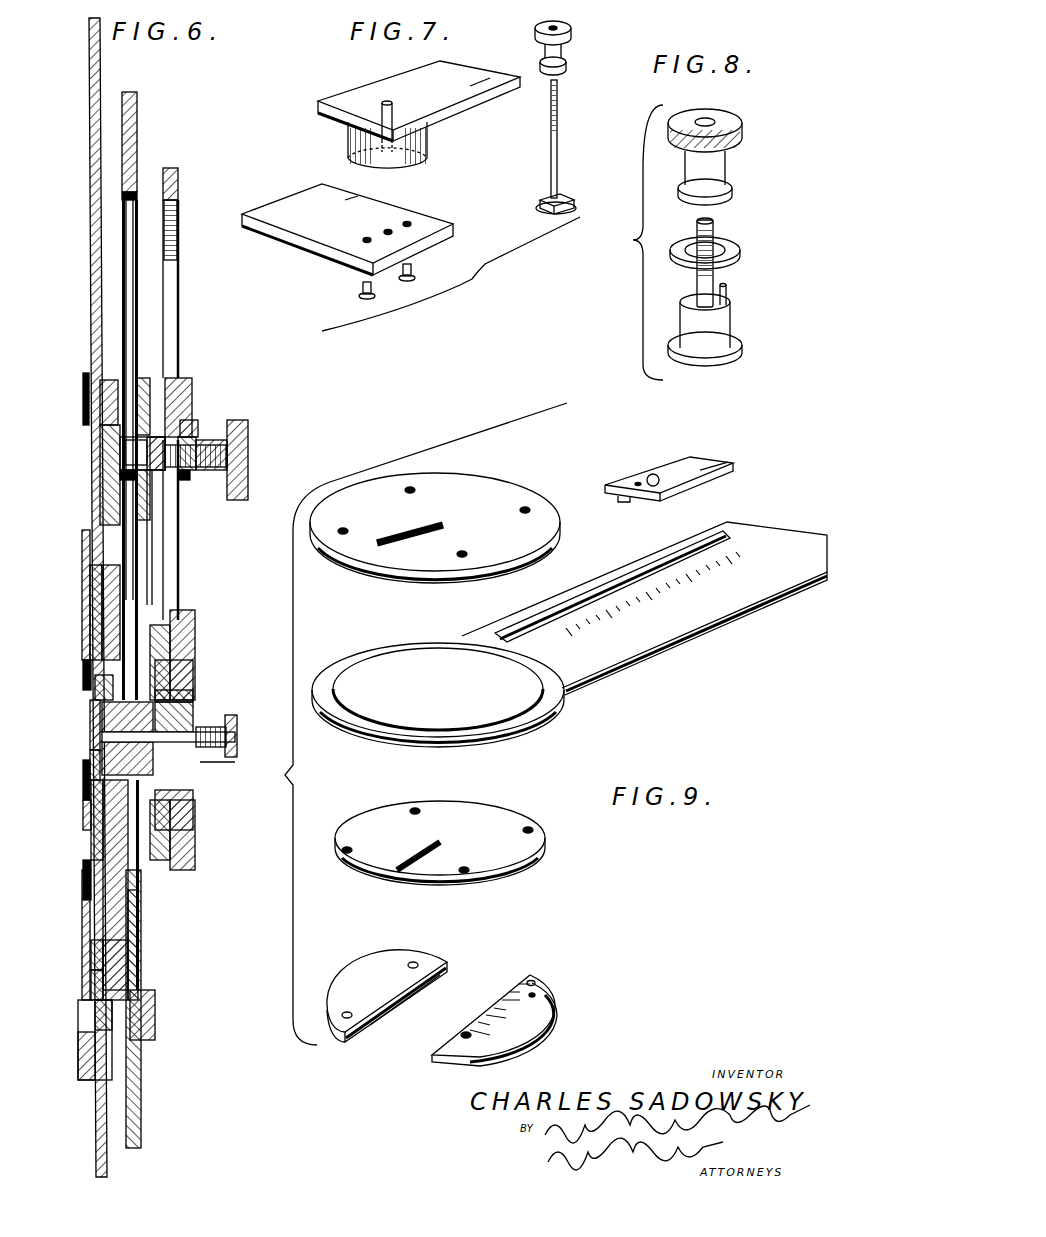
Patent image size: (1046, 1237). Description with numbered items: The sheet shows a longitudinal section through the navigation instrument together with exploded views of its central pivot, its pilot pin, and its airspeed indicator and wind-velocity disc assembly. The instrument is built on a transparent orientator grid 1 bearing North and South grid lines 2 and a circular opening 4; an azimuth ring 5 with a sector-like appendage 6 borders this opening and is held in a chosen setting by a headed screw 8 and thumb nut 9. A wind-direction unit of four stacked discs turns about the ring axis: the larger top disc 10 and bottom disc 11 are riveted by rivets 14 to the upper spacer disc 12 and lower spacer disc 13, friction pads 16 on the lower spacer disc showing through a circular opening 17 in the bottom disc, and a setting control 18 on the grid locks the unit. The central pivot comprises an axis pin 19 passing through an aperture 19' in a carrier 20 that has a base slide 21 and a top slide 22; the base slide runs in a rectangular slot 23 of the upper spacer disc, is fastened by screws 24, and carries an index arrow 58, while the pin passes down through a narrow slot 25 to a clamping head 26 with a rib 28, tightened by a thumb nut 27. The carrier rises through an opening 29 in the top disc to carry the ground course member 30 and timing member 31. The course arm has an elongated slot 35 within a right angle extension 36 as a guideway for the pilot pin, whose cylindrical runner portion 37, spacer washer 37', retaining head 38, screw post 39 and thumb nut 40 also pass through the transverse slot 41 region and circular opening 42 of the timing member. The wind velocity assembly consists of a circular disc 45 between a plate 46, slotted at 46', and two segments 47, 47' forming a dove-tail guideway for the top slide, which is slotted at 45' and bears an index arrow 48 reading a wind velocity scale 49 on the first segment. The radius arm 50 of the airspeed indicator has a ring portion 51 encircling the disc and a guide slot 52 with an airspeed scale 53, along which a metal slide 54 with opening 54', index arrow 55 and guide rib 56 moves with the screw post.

In FIG. 6, the orientator unit or grid 1 is at (92, 70).
In FIG. 7, the North and South grid lines 2 is at (316, 246).
In FIG. 6, the circular opening 4 is at (92, 960).
In FIG. 6, the azimuth ring 5 is at (88, 990).
In FIG. 6, the sector-like appendage 6 is at (110, 490).
In FIG. 6, the headed screw 8 is at (84, 398).
In FIG. 6, the thumb nut 9 is at (100, 414).
In FIG. 6, the top disc 10 is at (140, 956).
In FIG. 6, the bottom disc 11 is at (84, 562).
In FIG. 6, the upper spacer disc 12 is at (92, 602).
In FIG. 6, the lower spacer disc 13 is at (104, 616).
In FIG. 6, the rivets 14 is at (83, 682).
In FIG. 6, the friction pads 16 is at (86, 824).
In FIG. 6, the circular opening 17 is at (86, 878).
In FIG. 6, the setting control 18 is at (80, 1078).
In FIG. 6, the axis pin 19 is at (186, 728).
In FIG. 7, the axis pin 19 is at (576, 139).
In FIG. 7, the aperture 19' is at (364, 152).
In FIG. 6, the carrier 20 is at (158, 748).
In FIG. 7, the carrier 20 is at (428, 152).
In FIG. 6, the base slide 21 is at (90, 772).
In FIG. 6, the top slide 22 is at (185, 706).
In FIG. 7, the top slide 22 is at (390, 92).
In FIG. 6, the rectangular slot 23 is at (100, 861).
In FIG. 7, the screws 24 is at (407, 282).
In FIG. 6, the narrow slot 25 is at (84, 795).
In FIG. 6, the clamping head 26 is at (94, 726).
In FIG. 7, the clamping head 26 is at (548, 214).
In FIG. 6, the thumb nut 27 is at (234, 708).
In FIG. 7, the thumb nut 27 is at (572, 34).
In FIG. 6, the rib 28 is at (94, 752).
In FIG. 7, the rib 28 is at (566, 196).
In FIG. 6, the opening 29 is at (104, 688).
In FIG. 6, the ground course member or arm 30 is at (142, 1098).
In FIG. 6, the timing member 31 is at (144, 378).
In FIG. 6, the elongated slot 35 is at (128, 240).
In FIG. 6, the right angle extension 36 is at (138, 142).
In FIG. 6, the cylindrical runner portion 37 is at (108, 463).
In FIG. 8, the cylindrical runner portion 37 is at (727, 316).
In FIG. 6, the spacer washer 37' is at (108, 454).
In FIG. 8, the spacer washer 37' is at (726, 248).
In FIG. 6, the retaining head or flange 38 is at (125, 470).
In FIG. 8, the retaining head or flange 38 is at (742, 342).
In FIG. 6, the screw post 39 is at (248, 456).
In FIG. 8, the screw post 39 is at (716, 234).
In FIG. 6, the thumb nut 40 is at (248, 432).
In FIG. 8, the thumb nut 40 is at (736, 128).
In FIG. 6, the transverse slot 41 is at (146, 612).
In FIG. 6, the circular opening 42 is at (196, 410).
In FIG. 6, the circular disc 45 is at (191, 739).
In FIG. 9, the circular disc 45 is at (441, 837).
In FIG. 6, the slot 45' is at (188, 716).
In FIG. 9, the slot 45' is at (419, 844).
In FIG. 6, the plate 46 is at (190, 676).
In FIG. 9, the plate 46 is at (435, 518).
In FIG. 6, the slot 46' is at (229, 770).
In FIG. 9, the slot 46' is at (410, 519).
In FIG. 9, the segment 47 is at (487, 1031).
In FIG. 6, the segment 47' is at (188, 746).
In FIG. 9, the segment 47' is at (387, 996).
In FIG. 7, the index arrow 48 is at (478, 84).
In FIG. 9, the wind velocity scale 49 is at (508, 1033).
In FIG. 6, the radius arm or lever 50 is at (176, 170).
In FIG. 9, the radius arm or lever 50 is at (545, 622).
In FIG. 6, the ring or strap portion 51 is at (192, 632).
In FIG. 9, the ring or strap portion 51 is at (352, 652).
In FIG. 6, the guide slot 52 is at (179, 232).
In FIG. 9, the guide slot 52 is at (640, 575).
In FIG. 9, the airspeed scale 53 is at (717, 574).
In FIG. 6, the metal slide 54 is at (203, 433).
In FIG. 9, the metal slide 54 is at (669, 465).
In FIG. 6, the opening 54' is at (198, 493).
In FIG. 9, the opening 54' is at (642, 463).
In FIG. 9, the index arrow 55 is at (730, 465).
In FIG. 6, the guide rib 56 is at (192, 388).
In FIG. 9, the guide rib 56 is at (626, 503).
In FIG. 7, the index arrow 58 is at (358, 198).